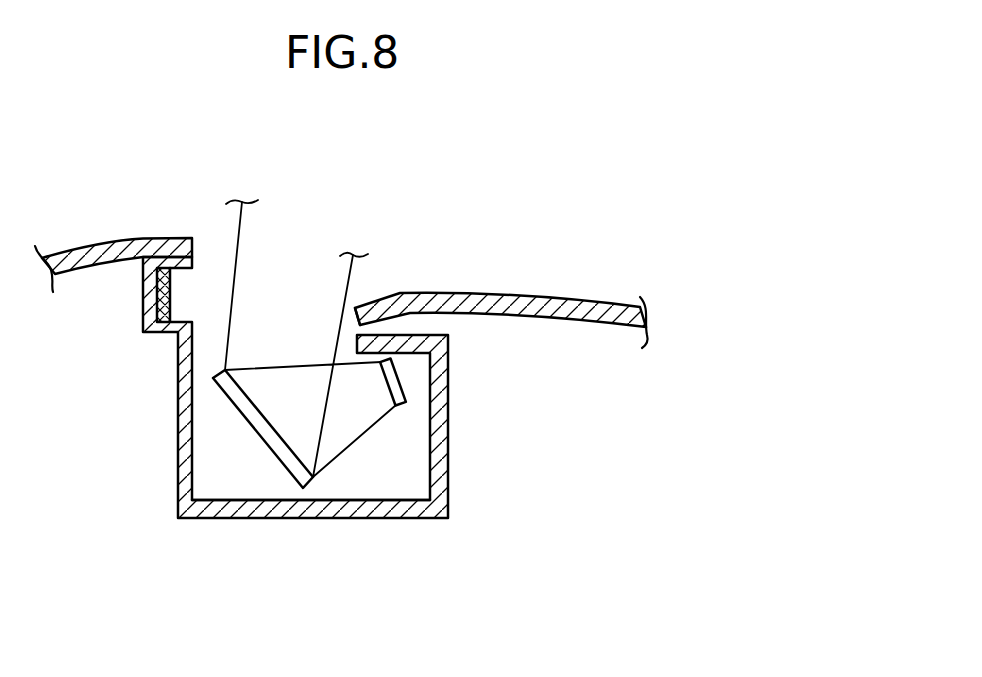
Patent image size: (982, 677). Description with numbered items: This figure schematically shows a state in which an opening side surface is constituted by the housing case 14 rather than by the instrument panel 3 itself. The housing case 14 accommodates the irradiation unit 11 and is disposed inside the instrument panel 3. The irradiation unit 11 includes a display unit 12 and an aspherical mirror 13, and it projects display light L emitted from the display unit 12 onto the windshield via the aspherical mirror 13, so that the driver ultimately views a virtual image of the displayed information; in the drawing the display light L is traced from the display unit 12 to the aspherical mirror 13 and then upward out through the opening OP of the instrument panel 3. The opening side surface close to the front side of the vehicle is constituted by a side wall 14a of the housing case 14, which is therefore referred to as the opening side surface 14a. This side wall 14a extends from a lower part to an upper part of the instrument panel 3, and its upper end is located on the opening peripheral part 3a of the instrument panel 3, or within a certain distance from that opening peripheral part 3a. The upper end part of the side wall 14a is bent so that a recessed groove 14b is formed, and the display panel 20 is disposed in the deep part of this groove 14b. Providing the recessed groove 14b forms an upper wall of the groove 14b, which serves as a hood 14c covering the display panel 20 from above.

The instrument panel 3 is at (542, 299).
The opening peripheral part 3a is at (193, 237).
The irradiation unit 11 is at (402, 447).
The display unit 12 is at (398, 383).
The aspherical mirror 13 is at (260, 448).
The housing case 14 is at (293, 519).
The side wall (opening side surface) 14a is at (178, 380).
The recessed groove 14b is at (181, 317).
The hood 14c is at (142, 288).
The display panel 20 is at (170, 293).
The opening OP is at (360, 289).
The display light L is at (340, 453).